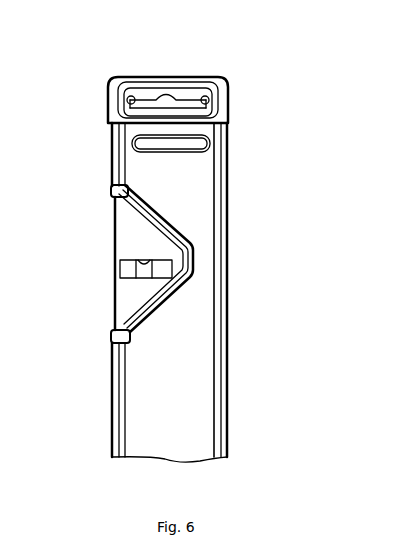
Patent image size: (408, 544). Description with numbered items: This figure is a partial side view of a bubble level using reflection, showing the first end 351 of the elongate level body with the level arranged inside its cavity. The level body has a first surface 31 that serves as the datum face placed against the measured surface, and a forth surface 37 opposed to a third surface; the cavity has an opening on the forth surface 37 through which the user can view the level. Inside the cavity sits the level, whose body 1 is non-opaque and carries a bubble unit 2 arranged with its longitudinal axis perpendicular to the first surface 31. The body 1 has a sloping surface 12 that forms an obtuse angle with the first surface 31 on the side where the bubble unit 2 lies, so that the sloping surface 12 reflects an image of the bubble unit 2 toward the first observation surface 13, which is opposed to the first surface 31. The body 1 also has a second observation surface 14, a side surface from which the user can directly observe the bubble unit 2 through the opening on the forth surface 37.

The first end 351 is at (229, 80).
The forth surface 37 is at (183, 198).
The first surface 31 is at (232, 227).
The sloping surface 12 is at (132, 273).
The first observation surface 13 is at (115, 302).
The second observation surface 14 is at (125, 318).
The bubble unit 2 is at (150, 292).
The body 1 is at (140, 305).